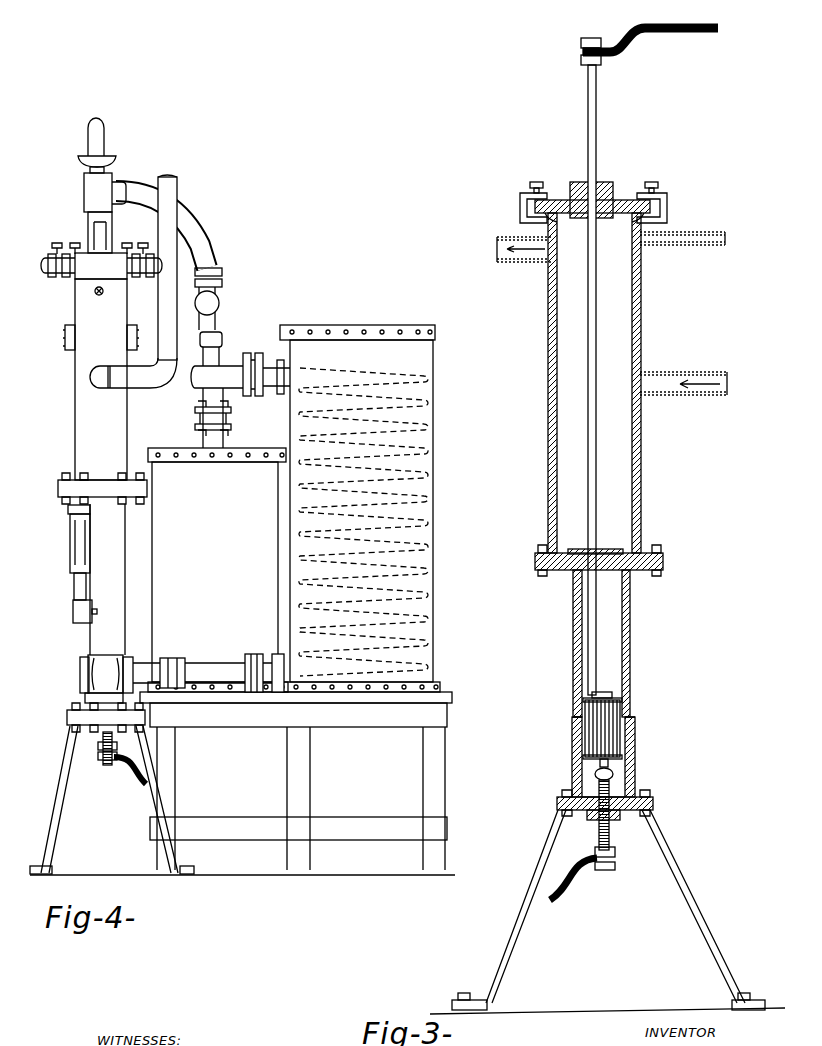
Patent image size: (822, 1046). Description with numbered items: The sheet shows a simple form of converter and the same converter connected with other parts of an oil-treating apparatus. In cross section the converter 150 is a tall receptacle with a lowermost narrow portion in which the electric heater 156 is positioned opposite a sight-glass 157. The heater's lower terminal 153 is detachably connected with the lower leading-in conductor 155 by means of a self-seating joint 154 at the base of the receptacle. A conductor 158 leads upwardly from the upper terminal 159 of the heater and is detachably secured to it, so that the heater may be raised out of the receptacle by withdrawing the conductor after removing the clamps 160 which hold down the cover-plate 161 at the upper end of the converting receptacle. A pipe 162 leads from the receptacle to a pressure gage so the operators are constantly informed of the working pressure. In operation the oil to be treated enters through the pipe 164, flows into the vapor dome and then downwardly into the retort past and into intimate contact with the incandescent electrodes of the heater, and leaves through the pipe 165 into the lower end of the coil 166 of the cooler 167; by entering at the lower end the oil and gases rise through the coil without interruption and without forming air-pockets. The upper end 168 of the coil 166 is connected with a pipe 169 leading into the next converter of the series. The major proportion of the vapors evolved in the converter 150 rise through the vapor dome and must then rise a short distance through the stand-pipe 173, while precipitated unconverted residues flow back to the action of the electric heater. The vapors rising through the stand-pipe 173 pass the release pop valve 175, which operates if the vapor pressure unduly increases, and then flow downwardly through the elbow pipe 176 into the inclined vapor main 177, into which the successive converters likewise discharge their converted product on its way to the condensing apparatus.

In FIG. 4, the converter 150 is at (102, 391).
In FIG. 3, the converter 150 is at (642, 340).
In FIG. 3, the lower terminal 153 is at (595, 771).
In FIG. 3, the self-seating joint 154 is at (595, 780).
In FIG. 4, the lower leading-in conductor 155 is at (110, 766).
In FIG. 3, the lower leading-in conductor 155 is at (610, 835).
In FIG. 3, the electric heater 156 is at (612, 716).
In FIG. 4, the sight-glass 157 is at (82, 683).
In FIG. 3, the sight-glass 157 is at (577, 738).
In FIG. 3, the conductor 158 is at (591, 153).
In FIG. 4, the upper terminal 159 is at (97, 233).
In FIG. 3, the upper terminal 159 is at (607, 692).
In FIG. 4, the clamps 160 is at (140, 250).
In FIG. 3, the clamps 160 is at (667, 206).
In FIG. 3, the cover-plate 161 is at (628, 197).
In FIG. 4, the pipe 162 is at (99, 296).
In FIG. 3, the pipe 162 is at (694, 237).
In FIG. 4, the pipe 164 is at (168, 182).
In FIG. 3, the pipe 164 is at (697, 374).
In FIG. 4, the pipe 165 is at (218, 672).
In FIG. 4, the coil 166 is at (425, 557).
In FIG. 4, the cooler 167 is at (436, 418).
In FIG. 4, the upper end of the coil 168 is at (291, 370).
In FIG. 4, the pipe 169 is at (233, 368).
In FIG. 4, the stand-pipe 173 is at (92, 217).
In FIG. 4, the release pop valve 175 is at (101, 127).
In FIG. 4, the elbow pipe 176 is at (199, 238).
In FIG. 4, the inclined vapor main 177 is at (216, 308).